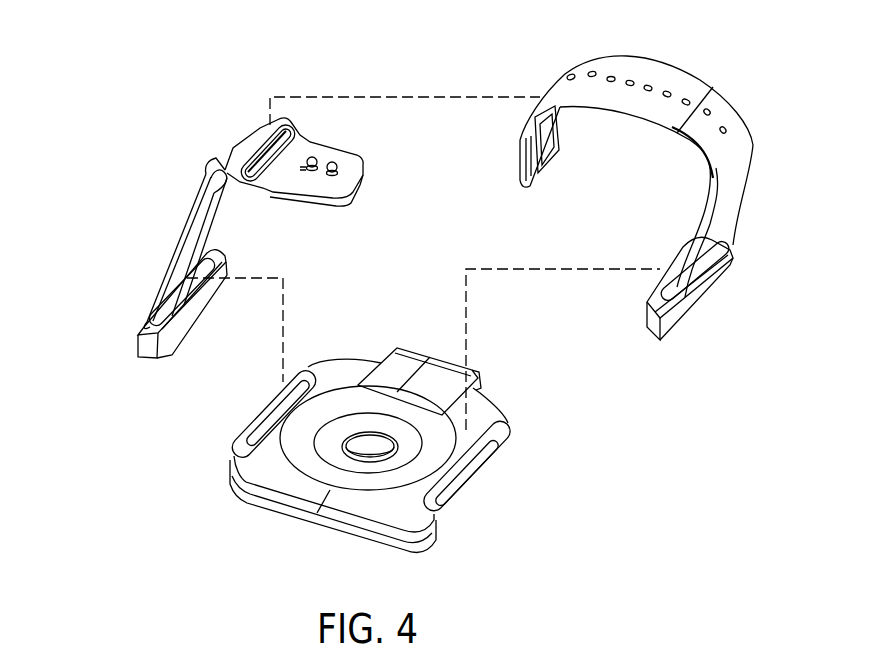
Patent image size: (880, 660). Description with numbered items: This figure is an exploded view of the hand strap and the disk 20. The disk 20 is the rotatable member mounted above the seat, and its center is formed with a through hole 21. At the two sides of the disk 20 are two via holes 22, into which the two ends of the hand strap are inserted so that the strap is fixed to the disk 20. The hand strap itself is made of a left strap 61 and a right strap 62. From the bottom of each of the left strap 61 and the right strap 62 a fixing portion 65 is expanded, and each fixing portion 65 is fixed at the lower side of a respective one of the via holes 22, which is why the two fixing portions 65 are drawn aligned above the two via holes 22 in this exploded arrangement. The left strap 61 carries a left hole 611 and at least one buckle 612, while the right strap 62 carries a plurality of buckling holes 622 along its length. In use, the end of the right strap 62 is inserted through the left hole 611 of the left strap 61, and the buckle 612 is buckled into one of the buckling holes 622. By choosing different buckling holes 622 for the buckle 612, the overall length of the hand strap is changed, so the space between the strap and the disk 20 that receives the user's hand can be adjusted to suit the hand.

The disk 20 is at (249, 507).
The through hole 21 is at (369, 438).
The via holes 22 is at (305, 426).
The left strap 61 is at (183, 223).
The left hole 611 is at (260, 152).
The buckle 612 is at (338, 161).
The right strap 62 is at (690, 72).
The buckling holes 622 is at (632, 80).
The fixing portion 65 is at (148, 360).